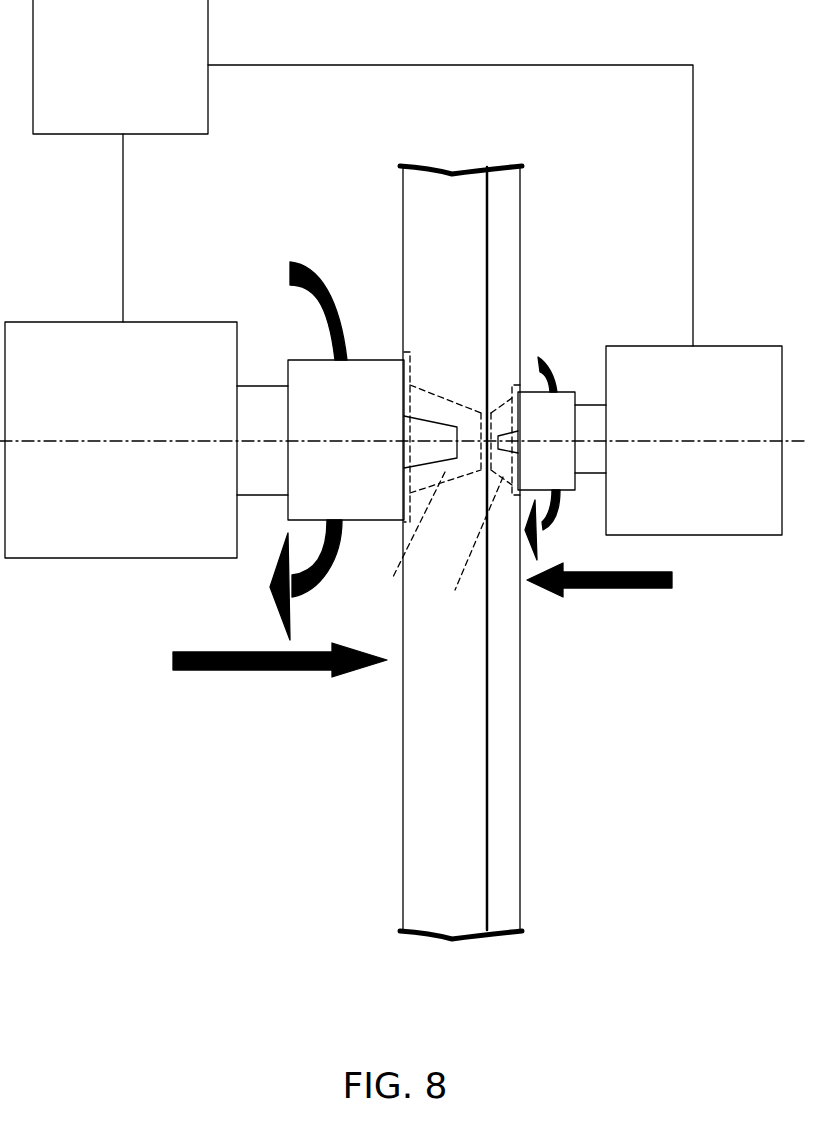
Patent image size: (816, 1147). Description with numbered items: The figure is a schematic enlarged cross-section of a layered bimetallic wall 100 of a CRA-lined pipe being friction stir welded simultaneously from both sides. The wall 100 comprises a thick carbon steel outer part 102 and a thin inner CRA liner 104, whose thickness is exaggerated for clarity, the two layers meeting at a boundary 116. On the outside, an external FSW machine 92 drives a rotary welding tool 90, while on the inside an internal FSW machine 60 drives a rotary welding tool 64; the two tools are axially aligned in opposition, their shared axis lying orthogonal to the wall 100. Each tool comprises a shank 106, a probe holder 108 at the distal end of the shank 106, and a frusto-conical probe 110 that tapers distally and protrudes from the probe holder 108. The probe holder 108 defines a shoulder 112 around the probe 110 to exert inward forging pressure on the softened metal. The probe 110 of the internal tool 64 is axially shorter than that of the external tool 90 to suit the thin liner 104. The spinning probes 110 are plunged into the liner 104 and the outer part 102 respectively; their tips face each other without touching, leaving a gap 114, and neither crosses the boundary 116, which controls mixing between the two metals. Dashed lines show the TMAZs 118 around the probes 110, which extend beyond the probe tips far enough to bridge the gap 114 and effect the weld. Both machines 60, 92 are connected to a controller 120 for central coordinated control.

The layered bimetallic wall 100 is at (365, 160).
The controller 120 is at (100, 71).
The external FSW machine 92 is at (107, 386).
The internal FSW machine 60 is at (682, 408).
The rotary welding tool 64 is at (568, 336).
The rotary welding tool 90 is at (263, 518).
The shank 106 is at (262, 405).
The probe holder 108 is at (356, 385).
The probe 110 is at (418, 432).
The shoulder 112 is at (405, 490).
The gap 114 is at (473, 432).
The boundary 116 is at (487, 660).
The TMAZs 118 is at (432, 543).
The carbon steel outer part 102 is at (417, 848).
The CRA liner 104 is at (503, 853).